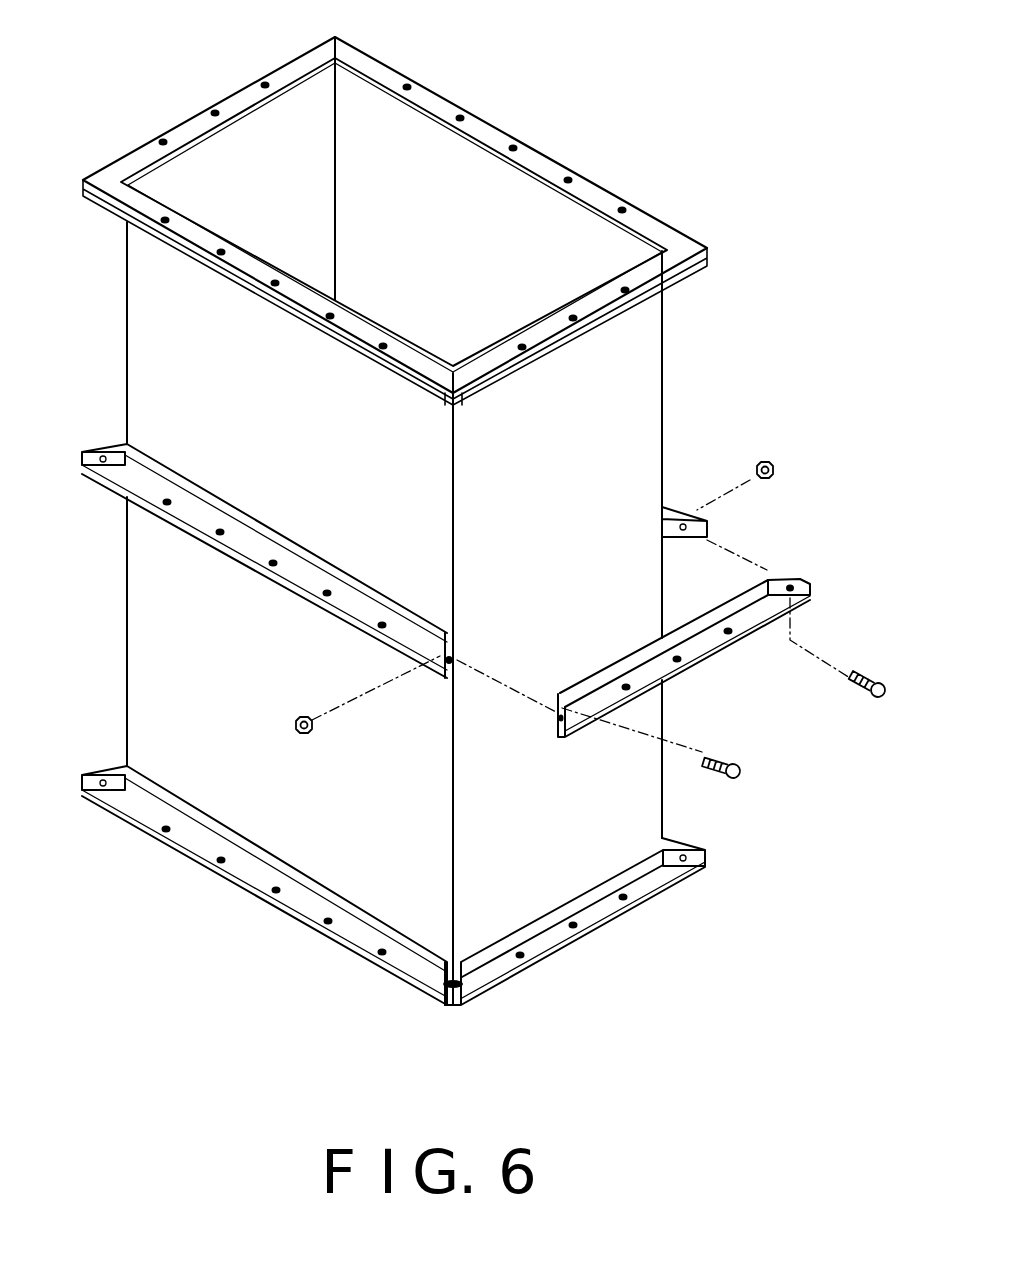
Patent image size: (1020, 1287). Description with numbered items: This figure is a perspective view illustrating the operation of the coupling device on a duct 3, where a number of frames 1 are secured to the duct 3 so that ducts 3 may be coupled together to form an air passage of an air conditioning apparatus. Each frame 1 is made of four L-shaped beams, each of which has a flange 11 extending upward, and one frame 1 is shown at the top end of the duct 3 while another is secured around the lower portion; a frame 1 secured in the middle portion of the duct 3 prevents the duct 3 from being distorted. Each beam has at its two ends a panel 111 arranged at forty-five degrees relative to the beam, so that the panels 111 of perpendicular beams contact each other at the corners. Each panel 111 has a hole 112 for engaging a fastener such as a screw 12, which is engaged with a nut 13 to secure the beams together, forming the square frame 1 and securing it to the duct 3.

The frame 1 is at (548, 149).
The duct 3 is at (180, 343).
The flange 11 is at (203, 505).
The panel 111 is at (800, 583).
The hole 112 is at (796, 598).
The screw 12 is at (876, 690).
The nut 13 is at (773, 463).